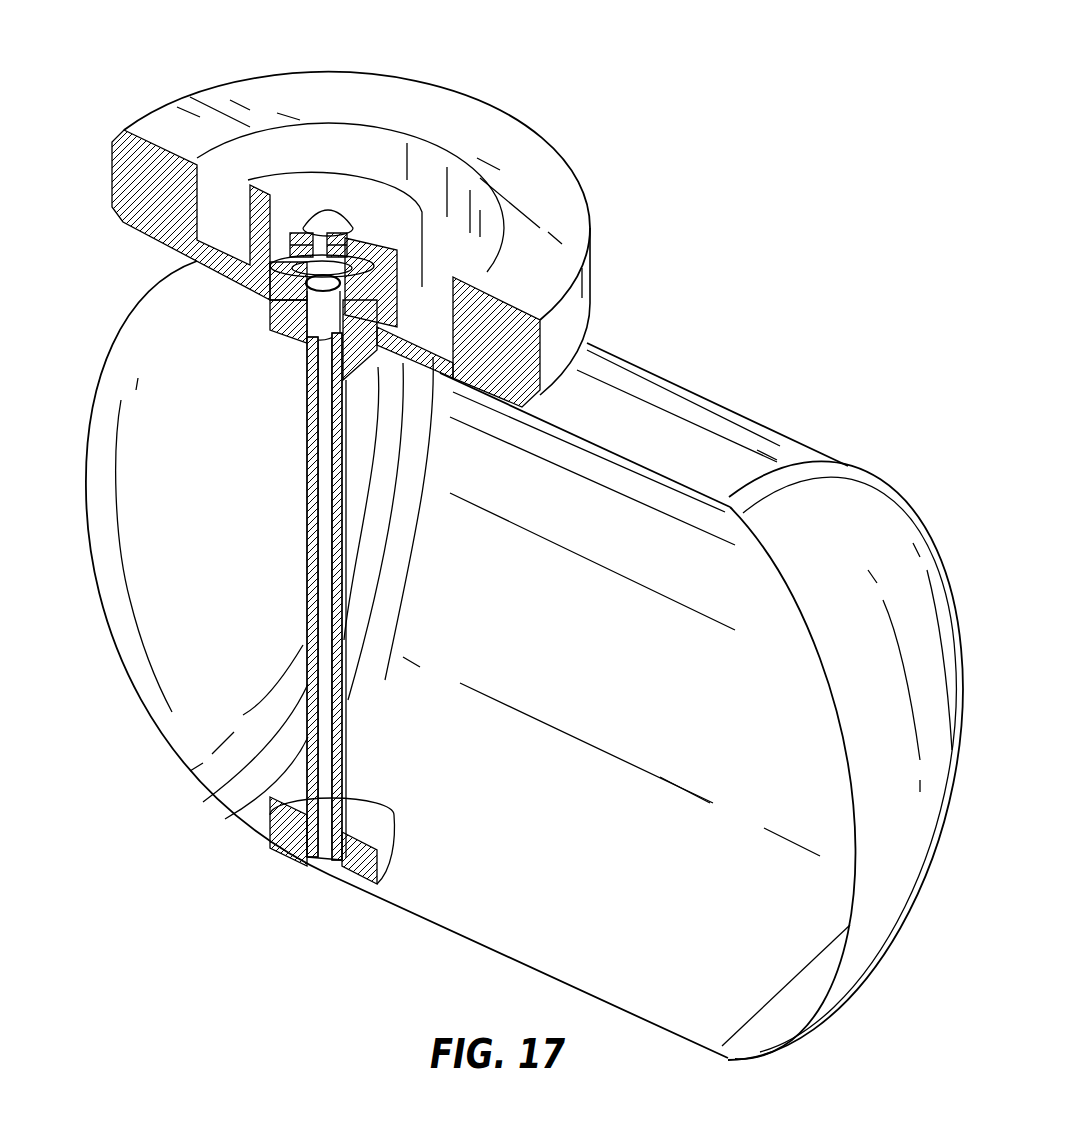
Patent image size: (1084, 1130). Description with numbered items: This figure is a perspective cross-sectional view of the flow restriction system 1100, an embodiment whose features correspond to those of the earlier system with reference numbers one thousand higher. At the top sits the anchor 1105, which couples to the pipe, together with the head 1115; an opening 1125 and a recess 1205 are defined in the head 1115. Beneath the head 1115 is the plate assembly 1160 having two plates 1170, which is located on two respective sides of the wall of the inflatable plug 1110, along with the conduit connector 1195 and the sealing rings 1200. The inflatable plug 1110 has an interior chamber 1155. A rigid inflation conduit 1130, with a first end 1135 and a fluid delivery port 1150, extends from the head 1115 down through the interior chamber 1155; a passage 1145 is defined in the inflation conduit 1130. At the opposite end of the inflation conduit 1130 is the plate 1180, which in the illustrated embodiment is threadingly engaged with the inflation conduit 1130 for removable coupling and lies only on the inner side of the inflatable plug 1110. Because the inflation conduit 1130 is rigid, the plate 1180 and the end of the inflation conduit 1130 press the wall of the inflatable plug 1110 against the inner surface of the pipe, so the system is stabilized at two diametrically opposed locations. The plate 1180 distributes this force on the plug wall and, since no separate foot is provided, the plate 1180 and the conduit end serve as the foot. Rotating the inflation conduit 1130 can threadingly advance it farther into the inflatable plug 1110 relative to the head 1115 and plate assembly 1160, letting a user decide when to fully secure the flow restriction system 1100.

The flow restriction system 1100 is at (648, 112).
The anchor 1105 is at (320, 200).
The inflatable plug 1110 is at (878, 548).
The head 1115 is at (490, 150).
The opening 1125 is at (330, 212).
The inflation conduit 1130 is at (340, 490).
The first end 1135 is at (300, 352).
The passage 1145 is at (316, 528).
The fluid delivery port 1150 is at (310, 808).
The interior chamber 1155 is at (622, 533).
The plate assembly 1160 is at (262, 306).
The plates 1170 is at (457, 293).
The plate 1180 is at (388, 858).
The conduit connector 1195 is at (270, 330).
The sealing rings 1200 is at (318, 340).
The recess 1205 is at (276, 235).